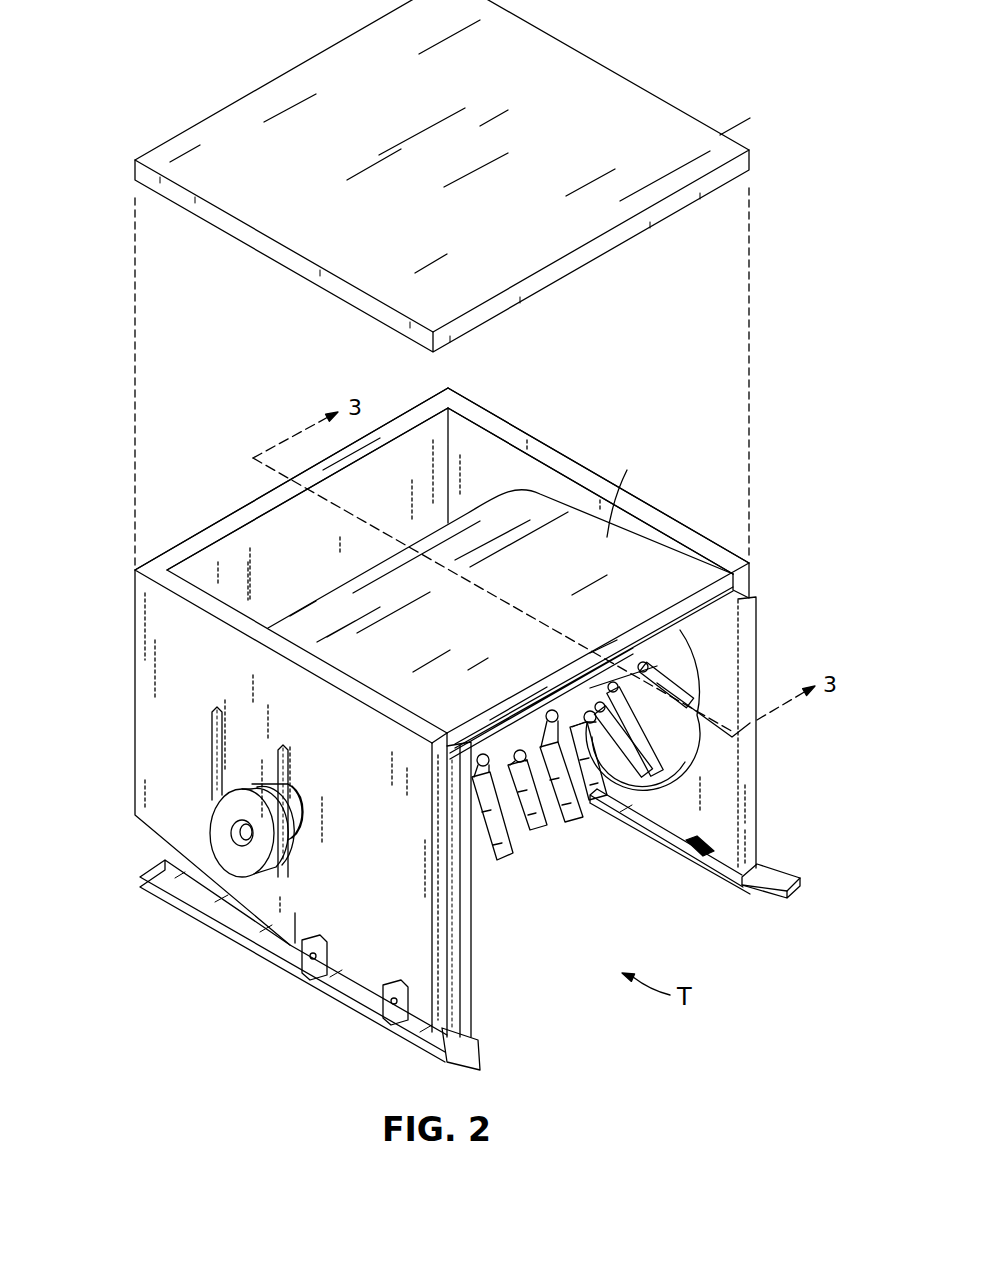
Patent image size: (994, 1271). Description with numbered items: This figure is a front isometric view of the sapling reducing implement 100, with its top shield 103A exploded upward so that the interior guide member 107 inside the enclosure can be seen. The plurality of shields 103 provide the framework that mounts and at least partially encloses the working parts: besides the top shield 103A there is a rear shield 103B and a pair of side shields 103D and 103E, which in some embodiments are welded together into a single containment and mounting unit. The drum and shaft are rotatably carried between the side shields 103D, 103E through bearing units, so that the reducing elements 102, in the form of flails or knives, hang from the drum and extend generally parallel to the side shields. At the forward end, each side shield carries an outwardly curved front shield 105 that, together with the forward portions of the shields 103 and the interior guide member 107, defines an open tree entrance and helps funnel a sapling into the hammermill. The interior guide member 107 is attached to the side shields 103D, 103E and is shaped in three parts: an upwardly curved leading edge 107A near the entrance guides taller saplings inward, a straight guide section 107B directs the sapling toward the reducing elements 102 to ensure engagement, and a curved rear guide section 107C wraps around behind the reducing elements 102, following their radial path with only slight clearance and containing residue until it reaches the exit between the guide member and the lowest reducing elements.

The sapling reducing implement 100 is at (640, 322).
The reducing elements 102 is at (592, 833).
The shields 103 is at (121, 750).
The top shield 103A is at (585, 80).
The rear shield 103B is at (200, 543).
The side shield 103D is at (148, 690).
The side shield 103E is at (472, 412).
The outwardly curved front shield 105 is at (752, 763).
The interior guide member 107 is at (682, 568).
The upwardly curved leading edge 107A is at (750, 592).
The straight guide section 107B is at (607, 537).
The curved rear guide section 107C is at (532, 497).